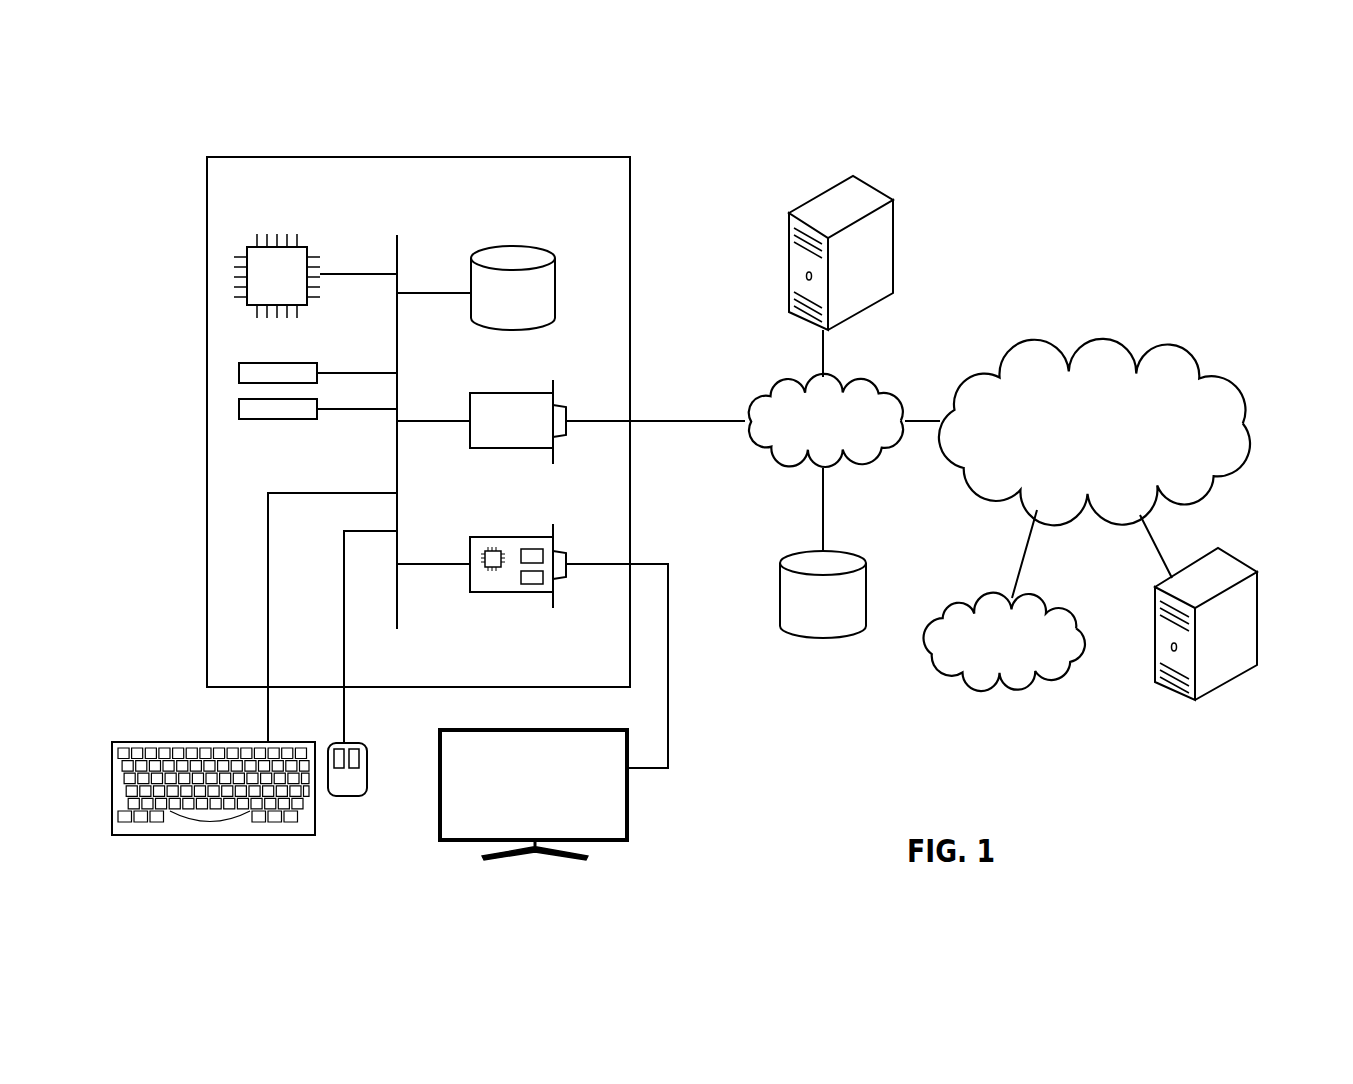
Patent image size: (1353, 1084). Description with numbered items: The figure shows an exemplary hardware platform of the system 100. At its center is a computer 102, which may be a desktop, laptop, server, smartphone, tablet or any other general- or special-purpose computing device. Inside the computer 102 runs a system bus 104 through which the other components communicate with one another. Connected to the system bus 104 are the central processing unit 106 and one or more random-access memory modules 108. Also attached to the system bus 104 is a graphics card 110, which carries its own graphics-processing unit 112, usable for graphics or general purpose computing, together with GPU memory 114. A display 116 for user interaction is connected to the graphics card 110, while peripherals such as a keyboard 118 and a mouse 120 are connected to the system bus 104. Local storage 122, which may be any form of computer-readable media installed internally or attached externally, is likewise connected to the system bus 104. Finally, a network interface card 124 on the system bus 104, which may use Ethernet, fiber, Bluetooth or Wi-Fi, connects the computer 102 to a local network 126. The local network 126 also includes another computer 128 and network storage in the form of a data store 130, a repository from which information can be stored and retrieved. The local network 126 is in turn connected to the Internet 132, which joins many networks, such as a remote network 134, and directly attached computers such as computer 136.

The system 100 is at (1178, 158).
The computer 102 is at (583, 157).
The system bus 104 is at (398, 246).
The central processing unit 106 is at (300, 246).
The random-access memory modules 108 is at (318, 403).
The graphics card 110 is at (532, 630).
The graphics-processing unit 112 is at (492, 571).
The GPU memory 114 is at (530, 585).
The display 116 is at (631, 820).
The keyboard 118 is at (217, 835).
The mouse 120 is at (347, 796).
The local storage 122 is at (557, 278).
The network interface card 124 is at (470, 396).
The local network 126 is at (880, 380).
The computer 128 is at (882, 190).
The data store 130 is at (858, 553).
The Internet 132 is at (1145, 342).
The remote network 134 is at (1065, 598).
The computer 136 is at (1233, 553).